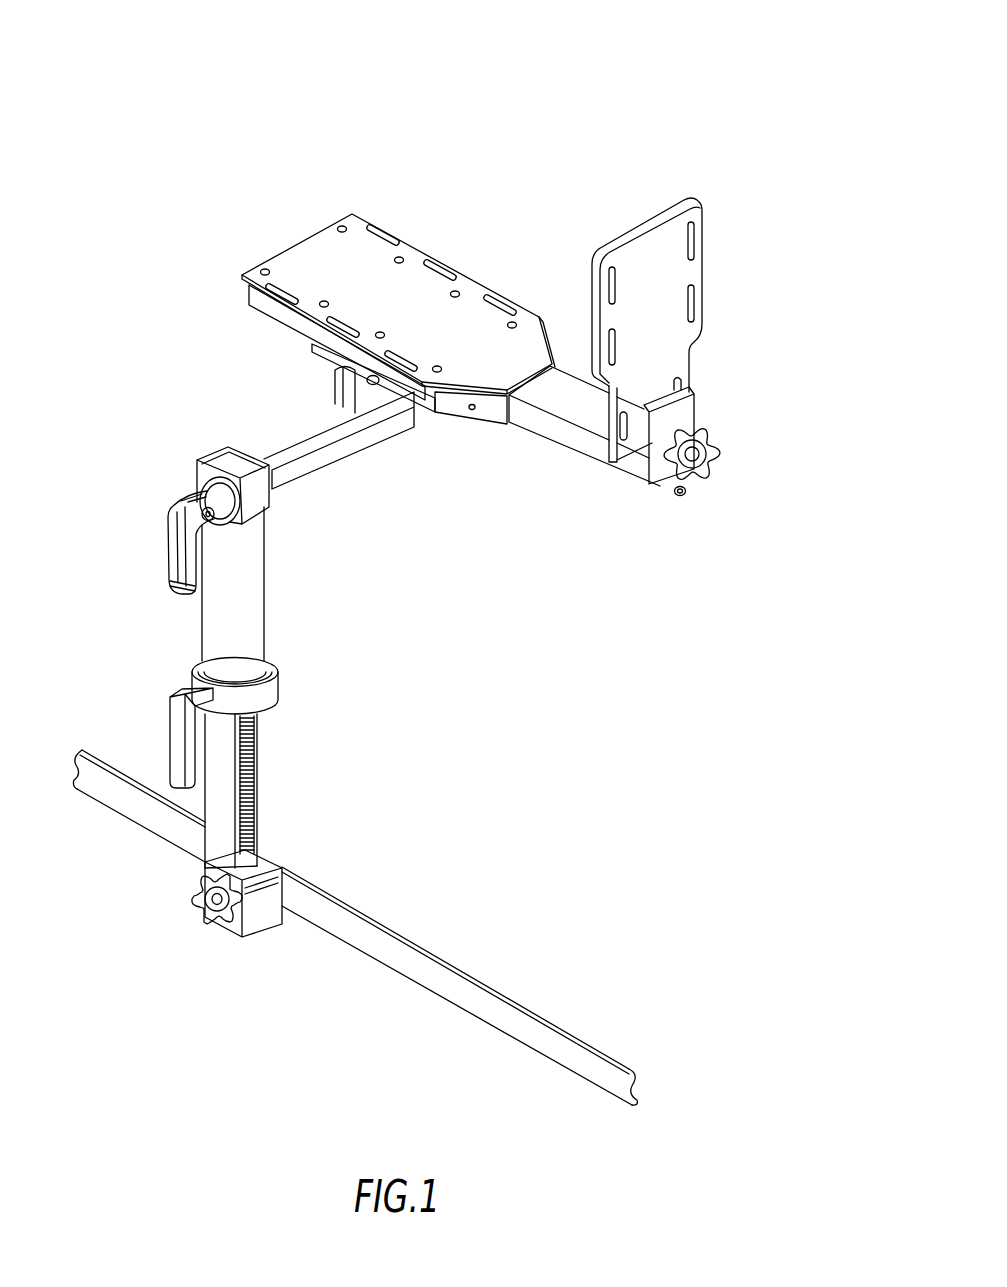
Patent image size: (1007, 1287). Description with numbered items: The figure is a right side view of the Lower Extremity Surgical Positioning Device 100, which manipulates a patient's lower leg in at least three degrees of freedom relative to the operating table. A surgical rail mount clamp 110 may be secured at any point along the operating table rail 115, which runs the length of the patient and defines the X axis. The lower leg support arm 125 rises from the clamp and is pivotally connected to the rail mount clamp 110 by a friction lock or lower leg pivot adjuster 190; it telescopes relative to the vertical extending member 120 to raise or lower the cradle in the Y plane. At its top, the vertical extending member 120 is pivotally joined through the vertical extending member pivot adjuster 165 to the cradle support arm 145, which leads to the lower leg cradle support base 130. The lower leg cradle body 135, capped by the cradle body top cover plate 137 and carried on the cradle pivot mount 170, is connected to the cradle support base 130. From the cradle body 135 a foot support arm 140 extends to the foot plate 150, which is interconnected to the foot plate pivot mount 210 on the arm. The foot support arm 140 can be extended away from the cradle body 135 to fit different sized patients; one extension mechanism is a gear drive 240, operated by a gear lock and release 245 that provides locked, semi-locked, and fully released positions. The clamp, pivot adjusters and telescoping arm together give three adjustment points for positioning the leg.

The positioning device 100 is at (658, 96).
The rail mount clamp 110 is at (312, 862).
The operating table rail 115 is at (453, 1007).
The vertical extending member 120 is at (248, 583).
The lower leg support arm 125 is at (257, 777).
The lower leg cradle support base 130 is at (308, 343).
The lower leg cradle body 135 is at (246, 292).
The cradle body top cover plate 137 is at (298, 243).
The foot support arm 140 is at (590, 447).
The cradle support arm 145 is at (313, 450).
The foot plate 150 is at (680, 268).
The vertical extending member pivot adjuster 165 is at (195, 450).
The cradle pivot mount 170 is at (336, 378).
The lower leg pivot adjuster 190 is at (250, 934).
The foot plate pivot mount 210 is at (704, 453).
The gear drive 240 is at (678, 494).
The gear lock and release 245 is at (470, 408).